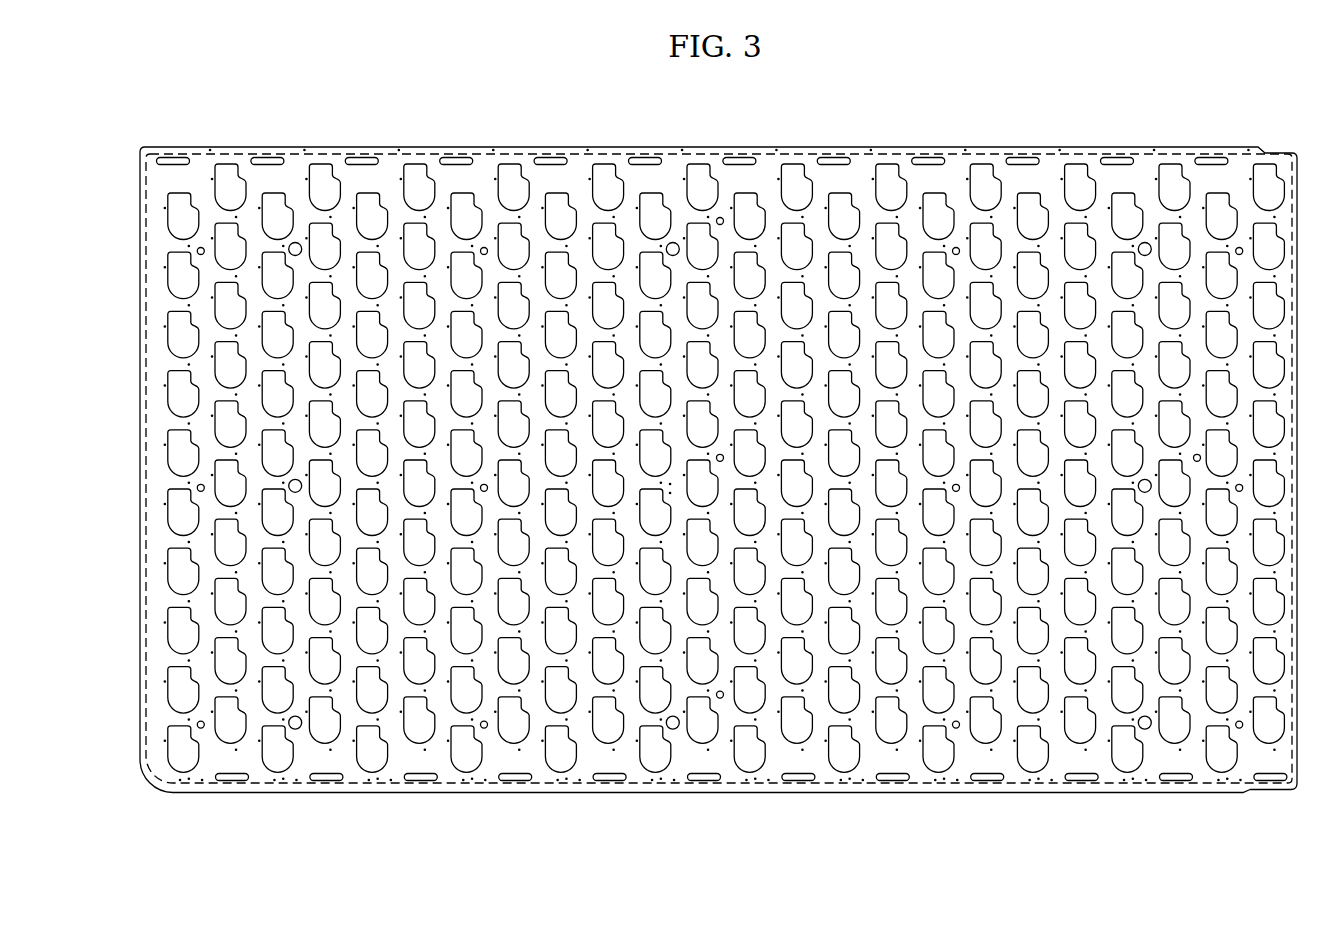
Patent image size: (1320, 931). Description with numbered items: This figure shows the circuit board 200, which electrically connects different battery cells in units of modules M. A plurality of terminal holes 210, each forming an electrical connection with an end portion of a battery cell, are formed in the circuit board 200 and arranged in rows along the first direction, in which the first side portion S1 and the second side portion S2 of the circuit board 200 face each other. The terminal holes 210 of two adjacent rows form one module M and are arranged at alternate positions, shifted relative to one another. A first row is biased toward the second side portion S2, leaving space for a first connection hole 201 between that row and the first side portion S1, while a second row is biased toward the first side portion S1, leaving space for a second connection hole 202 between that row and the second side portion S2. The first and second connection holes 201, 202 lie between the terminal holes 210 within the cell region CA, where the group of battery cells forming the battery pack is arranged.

The circuit board 200 is at (1183, 126).
The first connection hole 201 is at (891, 778).
The second connection hole 202 is at (553, 161).
The terminal hole 210 is at (889, 180).
The cell region CA is at (239, 152).
The first side portion S1 is at (668, 792).
The second side portion S2 is at (674, 150).
The module M is at (168, 800).